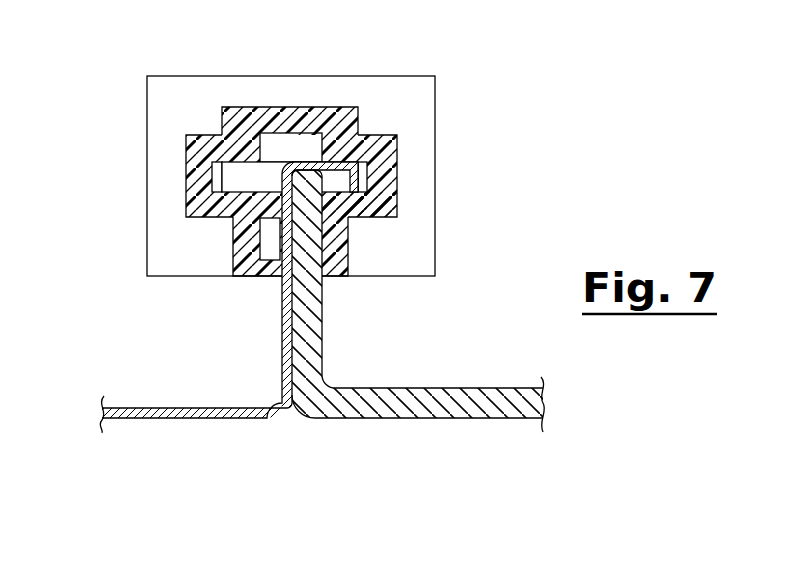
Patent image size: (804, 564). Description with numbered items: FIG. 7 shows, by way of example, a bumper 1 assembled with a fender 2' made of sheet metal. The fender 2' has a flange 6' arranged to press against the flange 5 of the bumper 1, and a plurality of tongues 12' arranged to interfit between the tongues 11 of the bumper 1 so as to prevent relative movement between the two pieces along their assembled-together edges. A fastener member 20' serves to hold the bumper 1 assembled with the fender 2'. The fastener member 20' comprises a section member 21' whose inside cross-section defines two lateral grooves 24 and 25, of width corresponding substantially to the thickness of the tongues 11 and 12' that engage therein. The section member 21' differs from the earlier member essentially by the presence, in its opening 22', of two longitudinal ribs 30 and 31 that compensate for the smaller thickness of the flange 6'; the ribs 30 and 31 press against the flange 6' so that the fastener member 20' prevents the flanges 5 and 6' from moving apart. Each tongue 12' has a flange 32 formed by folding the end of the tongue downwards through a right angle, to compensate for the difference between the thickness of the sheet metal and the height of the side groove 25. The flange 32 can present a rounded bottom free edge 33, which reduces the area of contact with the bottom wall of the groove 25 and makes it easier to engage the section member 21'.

The fastener member 20' is at (255, 138).
The section member 21' is at (290, 92).
The tongue 12' is at (325, 81).
The tongue 11 is at (248, 175).
The lateral groove 24 is at (217, 174).
The lateral groove 25 is at (362, 173).
The longitudinal rib 31 is at (202, 218).
The opening 22' is at (227, 267).
The flange 32 is at (365, 203).
The rounded bottom free edge 33 is at (365, 210).
The fender 2' is at (229, 319).
The bumper 1 is at (424, 434).
The flange 5 is at (312, 325).
The longitudinal rib 30 is at (280, 283).
The flange 6' is at (247, 374).